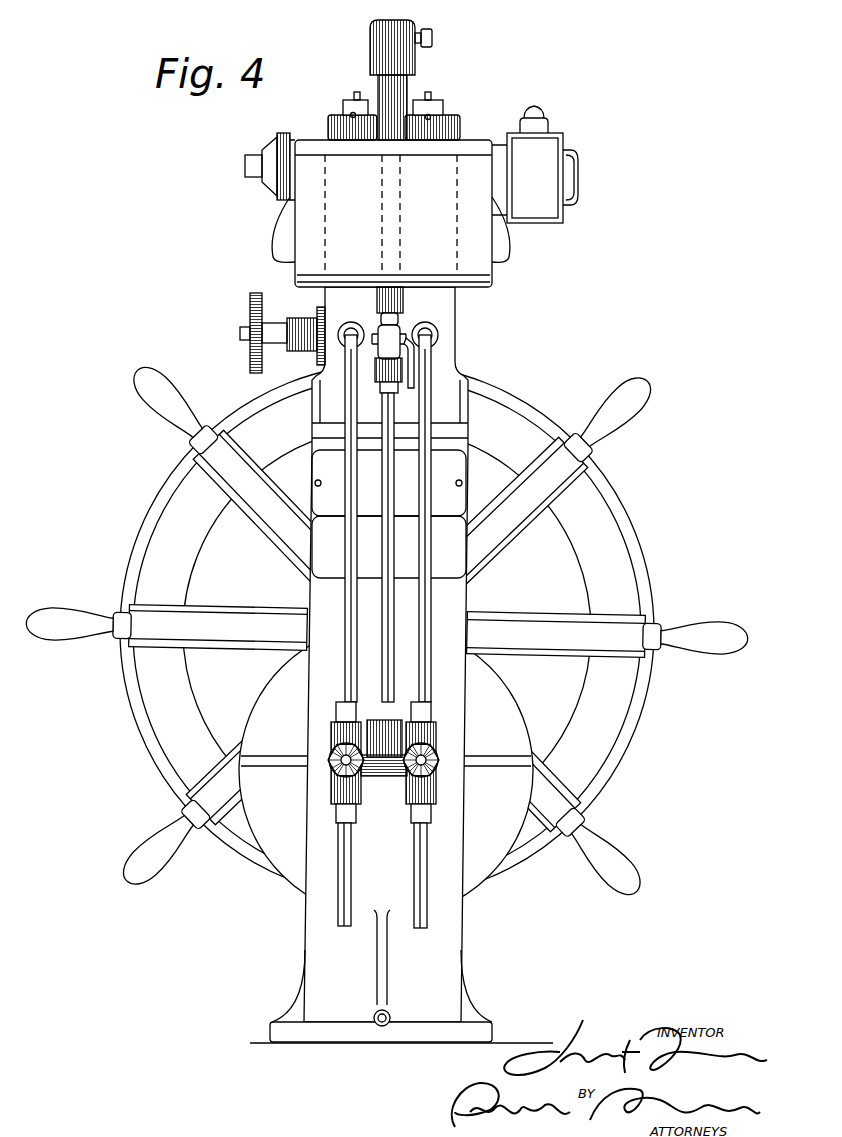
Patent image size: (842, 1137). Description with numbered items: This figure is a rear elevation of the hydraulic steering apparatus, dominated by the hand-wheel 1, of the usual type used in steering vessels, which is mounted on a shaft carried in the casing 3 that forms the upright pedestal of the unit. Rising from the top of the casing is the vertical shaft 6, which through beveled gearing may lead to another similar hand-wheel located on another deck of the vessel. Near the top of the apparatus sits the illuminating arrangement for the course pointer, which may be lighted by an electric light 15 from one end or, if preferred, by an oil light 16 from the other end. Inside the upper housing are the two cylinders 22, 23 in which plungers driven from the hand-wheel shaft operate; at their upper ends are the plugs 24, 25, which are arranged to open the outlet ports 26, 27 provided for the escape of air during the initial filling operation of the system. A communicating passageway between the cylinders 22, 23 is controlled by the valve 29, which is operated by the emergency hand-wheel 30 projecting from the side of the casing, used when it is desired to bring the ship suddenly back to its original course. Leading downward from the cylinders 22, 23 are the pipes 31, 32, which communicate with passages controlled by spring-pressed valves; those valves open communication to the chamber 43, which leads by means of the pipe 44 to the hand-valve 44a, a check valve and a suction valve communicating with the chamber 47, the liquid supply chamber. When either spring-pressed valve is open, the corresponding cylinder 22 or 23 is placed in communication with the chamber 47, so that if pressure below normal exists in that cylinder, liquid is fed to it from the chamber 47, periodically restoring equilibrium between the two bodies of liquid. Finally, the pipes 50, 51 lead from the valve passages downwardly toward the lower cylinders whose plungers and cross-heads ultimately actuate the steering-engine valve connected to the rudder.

The hand-wheel 1 is at (390, 636).
The casing 3 is at (497, 712).
The vertical shaft 6 is at (397, 97).
The electric light 15 is at (250, 165).
The oil light 16 is at (533, 215).
The cylinder 22 is at (457, 130).
The cylinder 23 is at (330, 127).
The plug 24 is at (433, 108).
The plug 25 is at (345, 100).
The outlet port 26 is at (431, 117).
The outlet port 27 is at (350, 114).
The valve 29 is at (283, 342).
The emergency hand-wheel 30 is at (252, 300).
The pipe 31 is at (348, 610).
The pipe 32 is at (429, 612).
The chamber 43 is at (383, 777).
The pipe 44 is at (394, 610).
The hand-valve 44a is at (390, 343).
The chamber 47 is at (307, 235).
The pipe 50 is at (340, 895).
The pipe 51 is at (425, 900).